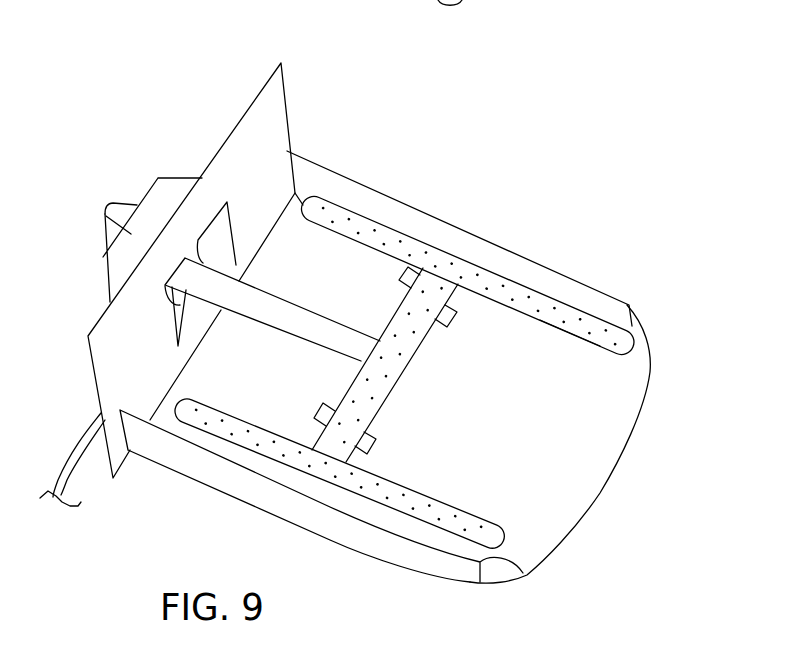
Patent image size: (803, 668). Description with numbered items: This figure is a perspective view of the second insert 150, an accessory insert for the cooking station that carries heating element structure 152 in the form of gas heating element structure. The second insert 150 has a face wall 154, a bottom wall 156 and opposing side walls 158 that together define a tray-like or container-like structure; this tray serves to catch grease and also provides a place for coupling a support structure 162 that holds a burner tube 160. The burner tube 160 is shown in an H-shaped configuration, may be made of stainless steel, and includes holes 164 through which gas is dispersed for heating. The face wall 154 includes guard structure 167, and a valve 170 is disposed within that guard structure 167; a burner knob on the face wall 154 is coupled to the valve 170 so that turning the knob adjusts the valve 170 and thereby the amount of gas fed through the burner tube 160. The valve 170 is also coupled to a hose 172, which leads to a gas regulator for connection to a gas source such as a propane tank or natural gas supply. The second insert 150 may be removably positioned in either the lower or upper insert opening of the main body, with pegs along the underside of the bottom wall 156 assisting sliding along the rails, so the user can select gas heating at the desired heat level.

The second insert 150 is at (209, 83).
The heating element structure 152 is at (158, 111).
The face wall 154 is at (287, 113).
The bottom wall 156 is at (490, 310).
The side walls 158 is at (588, 288).
The burner tube 160 is at (407, 351).
The support structure 162 is at (439, 319).
The holes 164 is at (578, 318).
The guard structure 167 is at (175, 187).
The valve 170 is at (172, 290).
The hose 172 is at (68, 461).